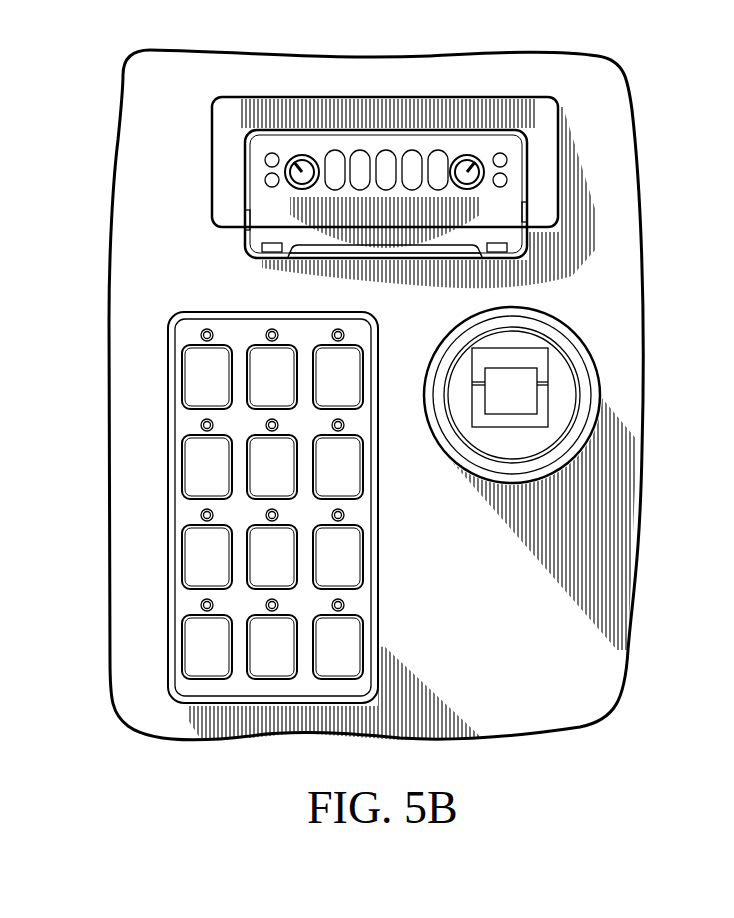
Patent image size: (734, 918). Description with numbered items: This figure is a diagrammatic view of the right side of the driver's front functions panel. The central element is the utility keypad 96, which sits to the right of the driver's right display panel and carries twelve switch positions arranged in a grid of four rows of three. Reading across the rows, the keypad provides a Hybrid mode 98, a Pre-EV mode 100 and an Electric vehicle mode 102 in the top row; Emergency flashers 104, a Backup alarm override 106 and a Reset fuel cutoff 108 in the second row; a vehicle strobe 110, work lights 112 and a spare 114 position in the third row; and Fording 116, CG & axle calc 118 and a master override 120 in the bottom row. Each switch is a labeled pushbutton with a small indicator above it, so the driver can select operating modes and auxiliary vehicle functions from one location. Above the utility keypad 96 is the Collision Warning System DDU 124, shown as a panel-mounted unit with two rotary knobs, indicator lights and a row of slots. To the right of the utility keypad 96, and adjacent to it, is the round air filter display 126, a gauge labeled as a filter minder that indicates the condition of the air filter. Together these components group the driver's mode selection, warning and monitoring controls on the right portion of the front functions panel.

The utility keypad 96 is at (163, 312).
The Hybrid mode 98 is at (190, 377).
The Pre-EV mode 100 is at (262, 355).
The Electric vehicle mode 102 is at (353, 357).
The Emergency flashers 104 is at (190, 467).
The Backup alarm override 106 is at (257, 493).
The Reset fuel cutoff 108 is at (352, 464).
The vehicle strobe 110 is at (190, 557).
The work lights 112 is at (257, 577).
The spare 114 is at (348, 558).
The Fording 116 is at (190, 660).
The CG & axle calc 118 is at (258, 670).
The master override 120 is at (355, 647).
The Collision Warning System (CWS) DDU 124 is at (537, 150).
The air filter display 126 is at (590, 330).